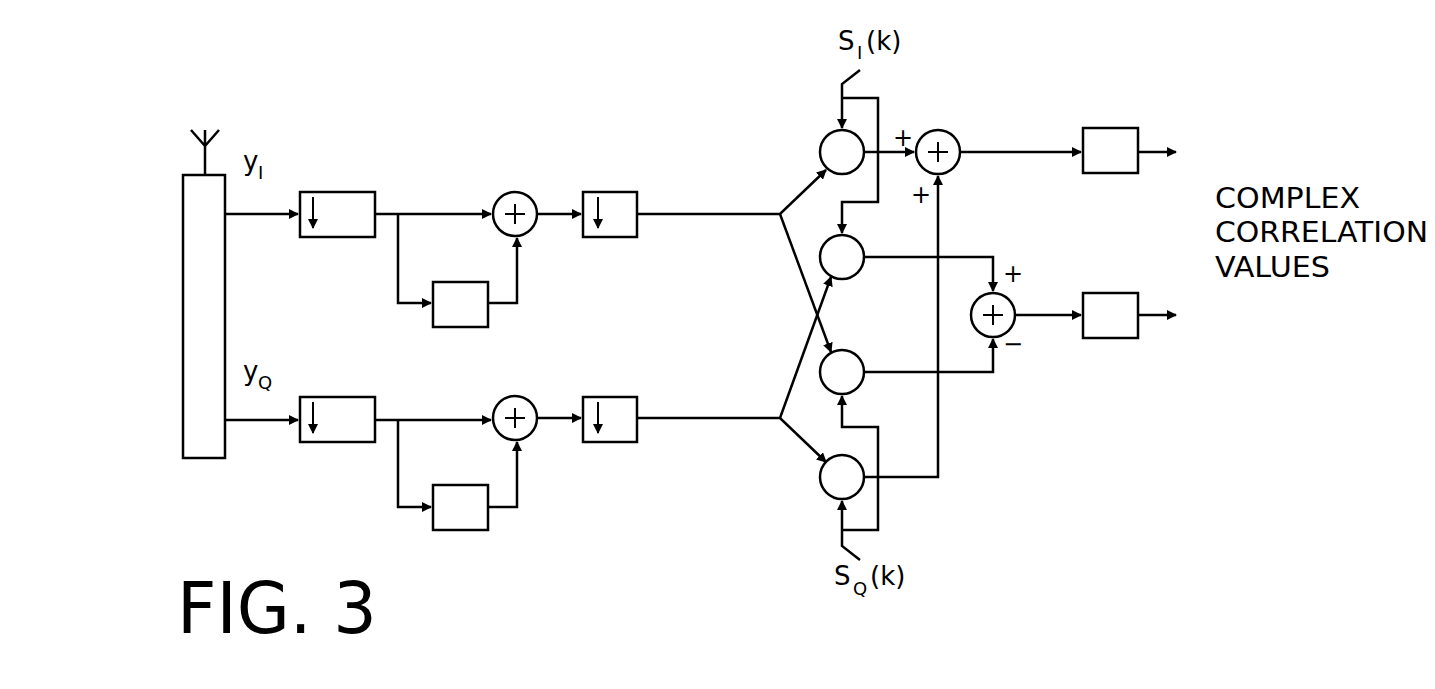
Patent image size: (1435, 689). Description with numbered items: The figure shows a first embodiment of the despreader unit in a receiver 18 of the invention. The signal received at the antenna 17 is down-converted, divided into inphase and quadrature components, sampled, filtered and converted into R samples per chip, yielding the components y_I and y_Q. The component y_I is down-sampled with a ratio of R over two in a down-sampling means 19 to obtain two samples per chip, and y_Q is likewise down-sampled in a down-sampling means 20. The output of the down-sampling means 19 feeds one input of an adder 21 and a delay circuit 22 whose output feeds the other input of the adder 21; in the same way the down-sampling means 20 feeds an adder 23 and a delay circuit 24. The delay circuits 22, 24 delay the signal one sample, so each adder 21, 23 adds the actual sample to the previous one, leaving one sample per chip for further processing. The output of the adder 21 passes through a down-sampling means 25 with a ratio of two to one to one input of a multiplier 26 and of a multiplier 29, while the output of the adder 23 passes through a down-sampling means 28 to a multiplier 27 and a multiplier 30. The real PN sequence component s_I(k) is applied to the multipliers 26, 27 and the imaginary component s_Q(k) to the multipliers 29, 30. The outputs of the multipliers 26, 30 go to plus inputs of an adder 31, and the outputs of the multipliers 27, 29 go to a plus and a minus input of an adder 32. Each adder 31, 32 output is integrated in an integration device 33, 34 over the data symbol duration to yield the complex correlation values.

The antenna 17 is at (206, 128).
The receiver 18 is at (183, 184).
The down-sampling means 19 is at (343, 191).
The down-sampling means 20 is at (343, 396).
The adder 21 is at (498, 200).
The delay circuit 22 is at (447, 281).
The adder 23 is at (498, 404).
The delay circuit 24 is at (447, 484).
The down-sampling means 25 is at (595, 191).
The multiplier 26 is at (819, 157).
The multiplier 27 is at (819, 262).
The down-sampling means 28 is at (595, 396).
The multiplier 29 is at (819, 378).
The multiplier 30 is at (819, 483).
The adder 31 is at (938, 129).
The adder 32 is at (970, 318).
The integration device 33 is at (1098, 127).
The integration device 34 is at (1098, 292).